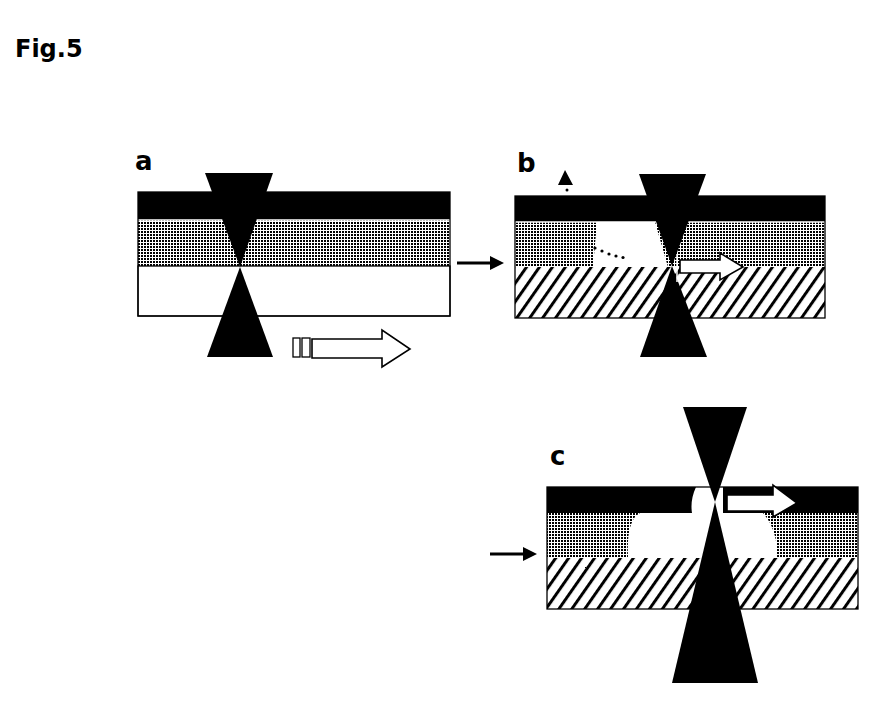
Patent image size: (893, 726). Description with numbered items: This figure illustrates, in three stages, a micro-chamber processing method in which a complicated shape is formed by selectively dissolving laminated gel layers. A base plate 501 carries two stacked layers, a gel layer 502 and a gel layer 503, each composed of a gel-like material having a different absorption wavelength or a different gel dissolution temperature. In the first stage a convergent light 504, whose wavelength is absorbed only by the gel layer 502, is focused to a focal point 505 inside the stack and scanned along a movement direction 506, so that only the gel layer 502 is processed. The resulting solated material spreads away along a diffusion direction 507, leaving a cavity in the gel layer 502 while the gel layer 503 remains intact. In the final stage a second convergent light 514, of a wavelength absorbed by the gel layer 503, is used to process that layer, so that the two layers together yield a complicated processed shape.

The base plate 501 is at (177, 302).
The gel layer 502 is at (138, 218).
The gel layer 503 is at (347, 193).
The convergent light 504 is at (235, 355).
The focal point of the convergent light 505 is at (260, 235).
The movement direction of the convergent light 506 is at (338, 350).
The diffusion direction of a solated material 507 is at (578, 159).
The convergent light 514 is at (683, 633).